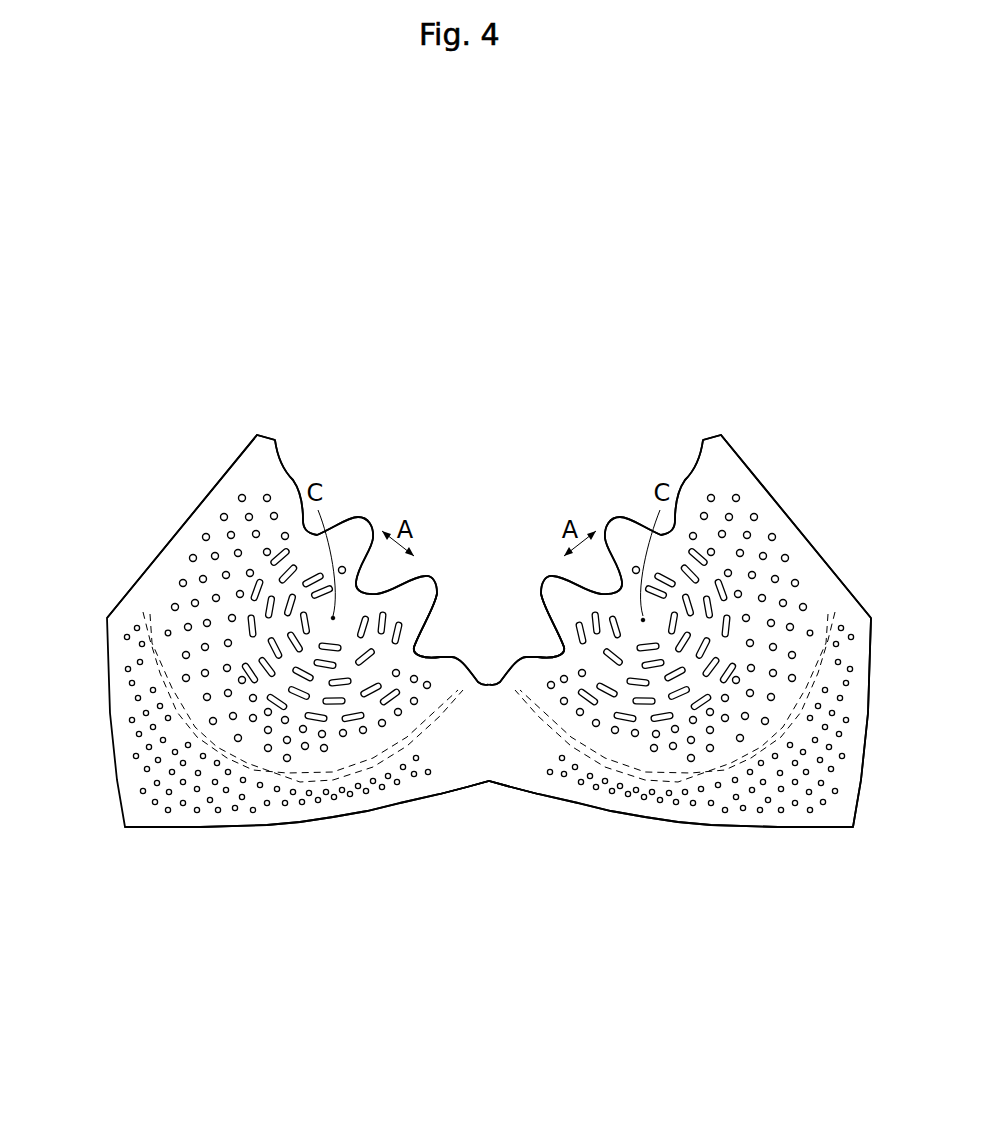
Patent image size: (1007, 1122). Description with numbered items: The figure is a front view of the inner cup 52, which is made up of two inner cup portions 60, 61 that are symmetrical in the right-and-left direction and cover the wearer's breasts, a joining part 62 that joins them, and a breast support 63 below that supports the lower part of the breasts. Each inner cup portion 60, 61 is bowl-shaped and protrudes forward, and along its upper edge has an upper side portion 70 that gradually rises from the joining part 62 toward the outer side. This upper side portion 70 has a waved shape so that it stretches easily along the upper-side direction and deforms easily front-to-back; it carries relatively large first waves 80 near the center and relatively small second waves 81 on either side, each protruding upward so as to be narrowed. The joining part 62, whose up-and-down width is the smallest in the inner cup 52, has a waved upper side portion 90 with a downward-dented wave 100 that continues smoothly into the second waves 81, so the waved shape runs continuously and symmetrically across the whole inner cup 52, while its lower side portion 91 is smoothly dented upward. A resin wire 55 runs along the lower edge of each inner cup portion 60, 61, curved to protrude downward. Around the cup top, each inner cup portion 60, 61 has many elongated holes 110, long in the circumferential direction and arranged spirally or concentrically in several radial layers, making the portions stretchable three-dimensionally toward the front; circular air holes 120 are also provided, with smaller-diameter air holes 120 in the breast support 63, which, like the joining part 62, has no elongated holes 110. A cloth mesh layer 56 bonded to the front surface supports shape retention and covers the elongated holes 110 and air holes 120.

The inner cup 52 is at (478, 421).
The resin wire 55 is at (277, 780).
The mesh layer 56 is at (800, 553).
The inner cup portion 60 is at (188, 508).
The inner cup portion 61 is at (776, 498).
The joining part 62 is at (498, 760).
The breast support 63 is at (333, 808).
The upper side portion 70 is at (337, 516).
The first wave 80 is at (365, 515).
The second wave 81 is at (302, 510).
The upper side portion 90 is at (488, 675).
The lower side portion 91 is at (497, 783).
The wave 100 is at (507, 677).
The elongated hole 110 is at (657, 713).
The air hole 120 is at (187, 628).